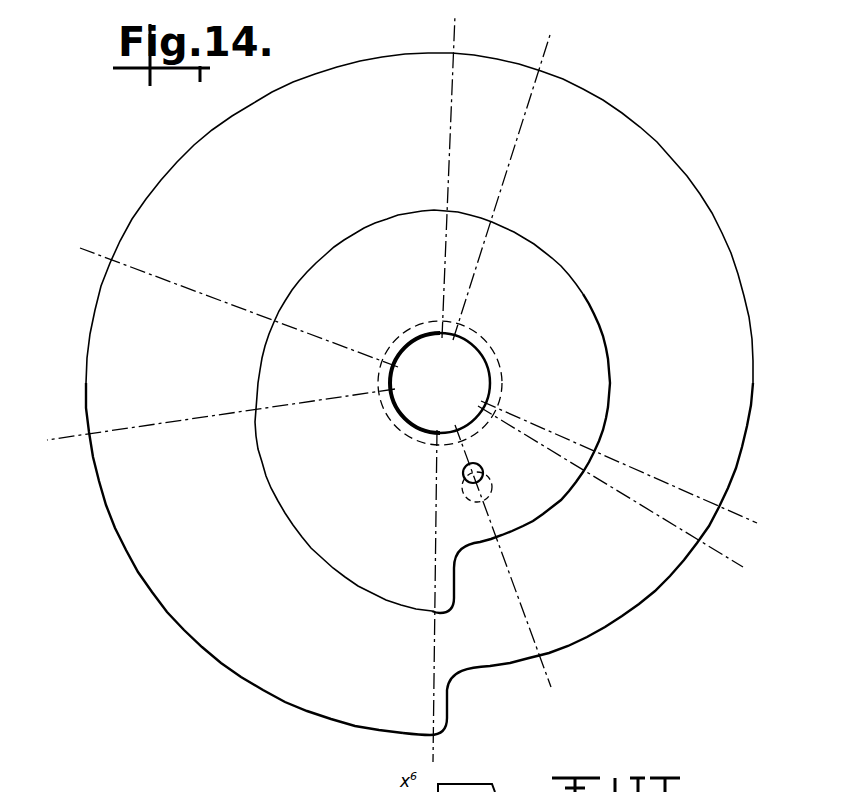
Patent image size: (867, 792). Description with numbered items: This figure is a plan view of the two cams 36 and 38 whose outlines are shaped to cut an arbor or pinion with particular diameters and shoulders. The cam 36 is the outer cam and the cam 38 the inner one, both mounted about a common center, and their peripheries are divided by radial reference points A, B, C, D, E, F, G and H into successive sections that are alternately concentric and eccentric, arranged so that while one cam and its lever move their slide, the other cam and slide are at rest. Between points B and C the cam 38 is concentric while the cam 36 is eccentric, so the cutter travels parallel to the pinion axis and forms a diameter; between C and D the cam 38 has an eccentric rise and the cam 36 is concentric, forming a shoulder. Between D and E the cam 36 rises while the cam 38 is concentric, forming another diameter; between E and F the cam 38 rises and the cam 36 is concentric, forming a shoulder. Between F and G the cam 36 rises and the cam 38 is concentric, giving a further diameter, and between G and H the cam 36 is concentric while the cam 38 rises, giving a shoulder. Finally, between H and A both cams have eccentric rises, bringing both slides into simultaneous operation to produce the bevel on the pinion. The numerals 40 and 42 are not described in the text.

The cam 36 is at (422, 394).
The cam 38 is at (432, 400).
The central shaft bore 40 is at (440, 383).
The pin 42 is at (477, 482).
The point A' A is at (425, 603).
The point B' B is at (510, 565).
The point C' C is at (620, 489).
The point D' D is at (629, 467).
The point E' E is at (507, 177).
The point F' F is at (453, 169).
The point G' G is at (228, 300).
The point H' H is at (212, 419).